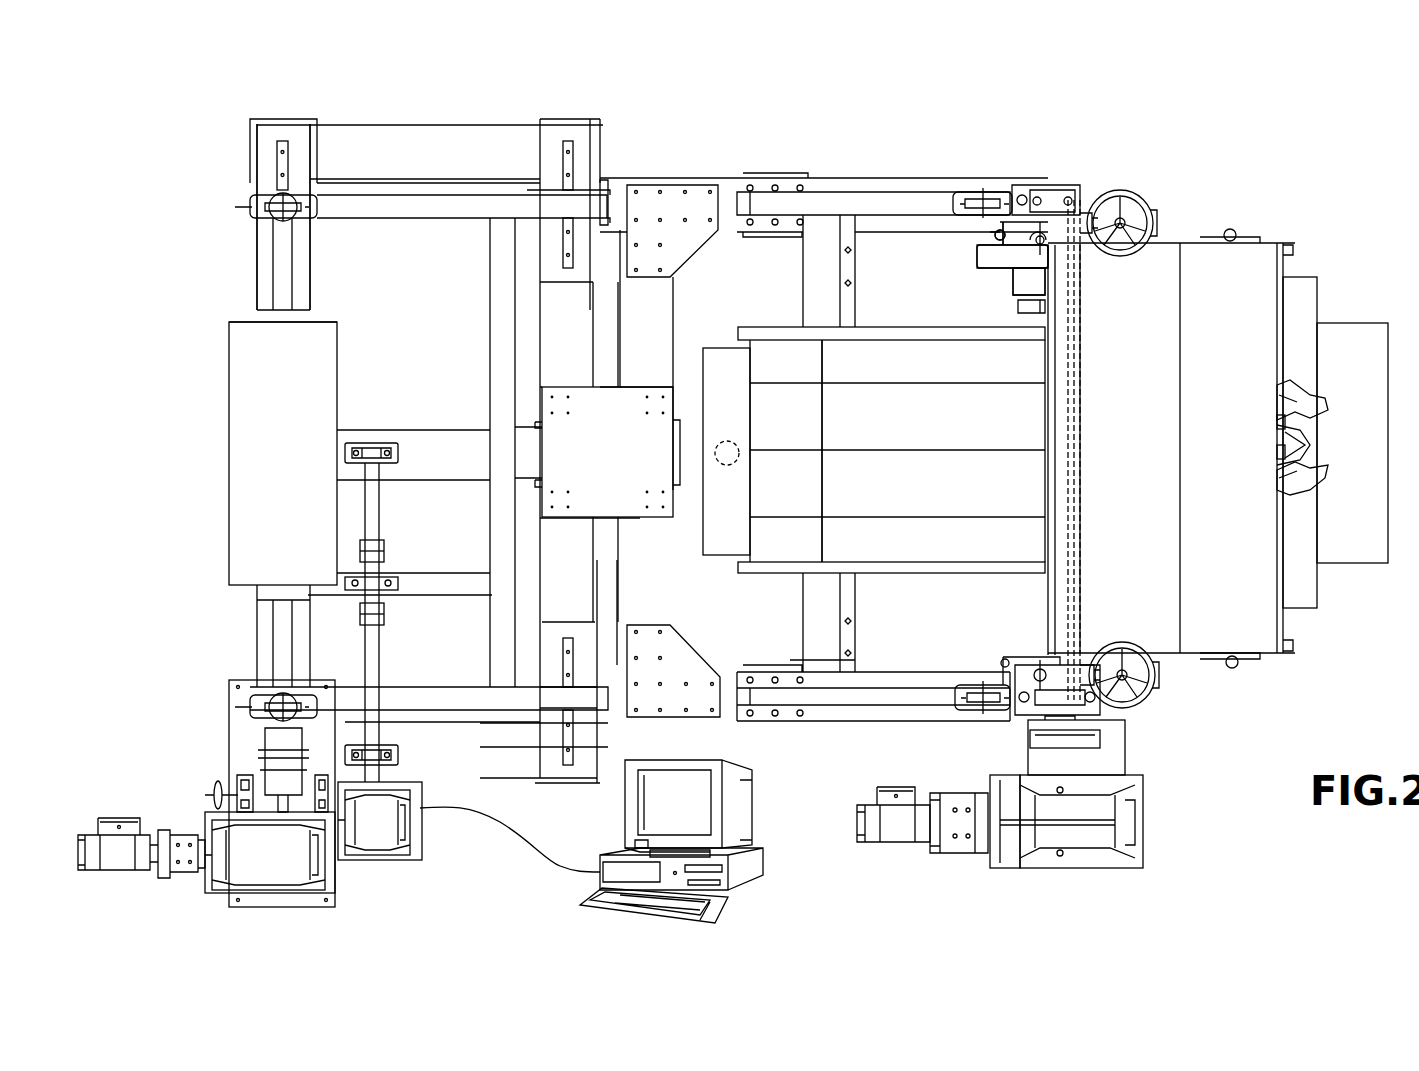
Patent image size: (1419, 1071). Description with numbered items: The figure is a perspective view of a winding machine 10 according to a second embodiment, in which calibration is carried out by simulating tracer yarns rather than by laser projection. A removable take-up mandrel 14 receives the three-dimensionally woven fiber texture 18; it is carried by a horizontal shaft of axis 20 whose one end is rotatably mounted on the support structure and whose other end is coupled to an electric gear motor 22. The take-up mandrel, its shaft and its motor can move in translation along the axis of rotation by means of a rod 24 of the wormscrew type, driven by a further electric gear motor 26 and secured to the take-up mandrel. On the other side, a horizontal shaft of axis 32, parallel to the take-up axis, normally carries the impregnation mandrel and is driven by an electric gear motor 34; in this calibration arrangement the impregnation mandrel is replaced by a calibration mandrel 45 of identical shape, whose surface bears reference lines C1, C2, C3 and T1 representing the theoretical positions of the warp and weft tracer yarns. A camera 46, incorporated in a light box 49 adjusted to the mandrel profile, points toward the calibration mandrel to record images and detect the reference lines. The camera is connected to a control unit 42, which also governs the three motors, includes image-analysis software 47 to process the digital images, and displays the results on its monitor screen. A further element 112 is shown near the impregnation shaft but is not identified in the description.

The winding machine 10 is at (1198, 142).
The take-up mandrel 14 is at (226, 343).
The fiber texture 18 is at (245, 402).
The shaft of axis 20 is at (288, 258).
The electric motor 22 is at (180, 862).
The rod of the wormscrew type 24 is at (370, 663).
The electric motor 26 is at (372, 842).
The shaft of axis 32 is at (1043, 307).
The electric motor 34 is at (1115, 810).
The control unit 42 is at (732, 771).
The calibration mandrel 45 is at (774, 580).
The camera 46 is at (732, 447).
The image-analysis software 47 is at (748, 853).
The light box 49 is at (722, 347).
The clamp 112 is at (1020, 225).
The reference line C1 is at (945, 517).
The reference line C2 is at (945, 450).
The reference line C3 is at (945, 383).
The reference line of the weft tracer T1 is at (822, 430).